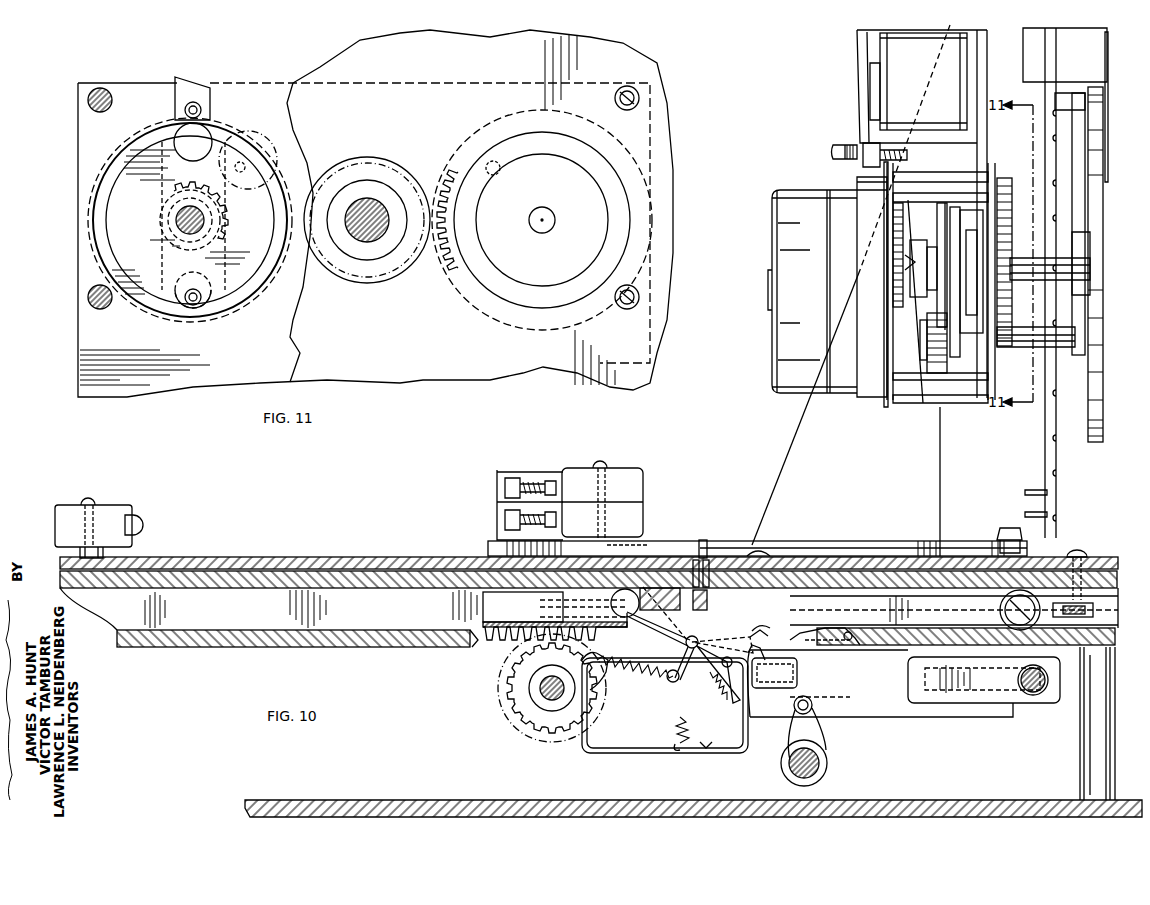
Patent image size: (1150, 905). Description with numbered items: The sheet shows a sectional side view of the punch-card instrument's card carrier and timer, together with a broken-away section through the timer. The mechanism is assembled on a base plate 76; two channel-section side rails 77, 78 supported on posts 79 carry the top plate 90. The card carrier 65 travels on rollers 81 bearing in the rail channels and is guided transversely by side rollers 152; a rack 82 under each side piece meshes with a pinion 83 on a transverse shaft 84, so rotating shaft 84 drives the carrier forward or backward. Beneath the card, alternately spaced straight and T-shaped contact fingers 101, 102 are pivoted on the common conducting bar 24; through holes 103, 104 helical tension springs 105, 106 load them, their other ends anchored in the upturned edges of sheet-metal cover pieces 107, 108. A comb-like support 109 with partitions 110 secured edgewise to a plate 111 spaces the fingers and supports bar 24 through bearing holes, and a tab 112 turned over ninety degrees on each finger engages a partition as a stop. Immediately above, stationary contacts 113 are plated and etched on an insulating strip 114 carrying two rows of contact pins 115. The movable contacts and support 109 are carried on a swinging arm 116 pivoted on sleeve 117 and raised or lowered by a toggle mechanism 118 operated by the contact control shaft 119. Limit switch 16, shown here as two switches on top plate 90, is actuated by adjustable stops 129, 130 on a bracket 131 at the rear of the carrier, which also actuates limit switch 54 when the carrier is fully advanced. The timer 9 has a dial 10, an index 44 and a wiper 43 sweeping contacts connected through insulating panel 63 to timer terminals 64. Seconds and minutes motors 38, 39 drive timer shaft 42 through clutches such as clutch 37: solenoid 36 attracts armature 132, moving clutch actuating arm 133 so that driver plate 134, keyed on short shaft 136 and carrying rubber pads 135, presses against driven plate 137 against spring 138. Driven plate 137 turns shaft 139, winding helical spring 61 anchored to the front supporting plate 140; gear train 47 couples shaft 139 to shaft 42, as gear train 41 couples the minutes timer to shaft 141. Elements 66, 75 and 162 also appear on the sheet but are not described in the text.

In FIG. 11, the timer 9 is at (475, 348).
In FIG. 10, the timer 9 is at (1107, 212).
In FIG. 10, the dial 10 is at (1102, 340).
In FIG. 10, the limit switch 16 is at (640, 515).
In FIG. 10, the common conducting bar 24 is at (640, 605).
In FIG. 10, the solenoid 36 is at (918, 81).
In FIG. 11, the clutch 37 is at (222, 268).
In FIG. 10, the clutch 37 is at (910, 404).
In FIG. 11, the seconds timer motor 38 is at (245, 310).
In FIG. 10, the seconds timer motor 38 is at (766, 318).
In FIG. 11, the minutes timer motor 39 is at (633, 157).
In FIG. 10, the gear train 41 is at (1008, 348).
In FIG. 11, the timer shaft 42 is at (365, 232).
In FIG. 10, the timer shaft 42 is at (1030, 282).
In FIG. 10, the wiper 43 is at (1068, 92).
In FIG. 10, the index 44 is at (1108, 92).
In FIG. 11, the gear train 47 is at (440, 290).
In FIG. 10, the limit switch 54 is at (107, 510).
In FIG. 10, the helical spring 61 is at (972, 230).
In FIG. 10, the insulating panel 63 is at (1048, 437).
In FIG. 10, the timer terminals 64 is at (1030, 512).
In FIG. 10, the carrier 65 is at (882, 572).
In FIG. 10, the block 66 is at (707, 598).
In FIG. 10, the stop 75 is at (1094, 606).
In FIG. 10, the base plate 76 is at (1040, 800).
In FIG. 10, the side rail 77 is at (1108, 570).
In FIG. 10, the side rail 78 is at (468, 640).
In FIG. 10, the posts 79 is at (1090, 733).
In FIG. 10, the rollers 81 is at (560, 603).
In FIG. 10, the rack 82 is at (497, 642).
In FIG. 10, the pinion 83 is at (513, 686).
In FIG. 10, the transverse shaft 84 is at (550, 694).
In FIG. 10, the top plate 90 is at (303, 557).
In FIG. 10, the straight contact finger 101 is at (670, 634).
In FIG. 10, the T-shaped contact finger 102 is at (676, 684).
In FIG. 10, the hole 103 is at (728, 698).
In FIG. 10, the hole 104 is at (662, 676).
In FIG. 10, the helical tension spring 105 is at (690, 731).
In FIG. 10, the helical tension spring 106 is at (606, 688).
In FIG. 10, the sheet metal cover piece 107 is at (715, 745).
In FIG. 10, the sheet metal cover piece 108 is at (622, 755).
In FIG. 10, the comb-like metal support 109 is at (852, 660).
In FIG. 10, the partitions 110 is at (778, 665).
In FIG. 10, the plate 111 is at (765, 670).
In FIG. 10, the tab 112 is at (752, 632).
In FIG. 10, the stationary contacts 113 is at (625, 628).
In FIG. 10, the insulating strip 114 is at (657, 600).
In FIG. 10, the contact pins 115 is at (704, 556).
In FIG. 10, the swinging arm 116 is at (898, 706).
In FIG. 10, the pivot sleeve 117 is at (1035, 696).
In FIG. 10, the toggle mechanism 118 is at (828, 727).
In FIG. 10, the contact control shaft 119 is at (822, 768).
In FIG. 10, the adjustable stop 129 is at (545, 478).
In FIG. 10, the adjustable stop 130 is at (500, 515).
In FIG. 10, the bracket 131 is at (490, 545).
In FIG. 11, the armature 132 is at (193, 82).
In FIG. 10, the armature 132 is at (858, 112).
In FIG. 11, the clutch actuating arm 133 is at (175, 232).
In FIG. 10, the clutch actuating arm 133 is at (910, 310).
In FIG. 11, the driver clutch plate 134 is at (143, 298).
In FIG. 10, the driver clutch plate 134 is at (922, 350).
In FIG. 11, the rubber pads 135 is at (182, 125).
In FIG. 10, the rubber pads 135 is at (943, 178).
In FIG. 10, the short shaft 136 is at (893, 296).
In FIG. 11, the driven clutch plate 137 is at (160, 303).
In FIG. 10, the driven clutch plate 137 is at (949, 210).
In FIG. 10, the spring 138 is at (955, 335).
In FIG. 11, the short shaft 139 is at (178, 222).
In FIG. 10, the short shaft 139 is at (980, 230).
In FIG. 11, the front supporting plate 140 is at (78, 275).
In FIG. 10, the front supporting plate 140 is at (990, 147).
In FIG. 11, the shaft 141 is at (540, 233).
In FIG. 10, the side rollers 152 is at (1078, 552).
In FIG. 10, the dots 162 is at (1062, 445).